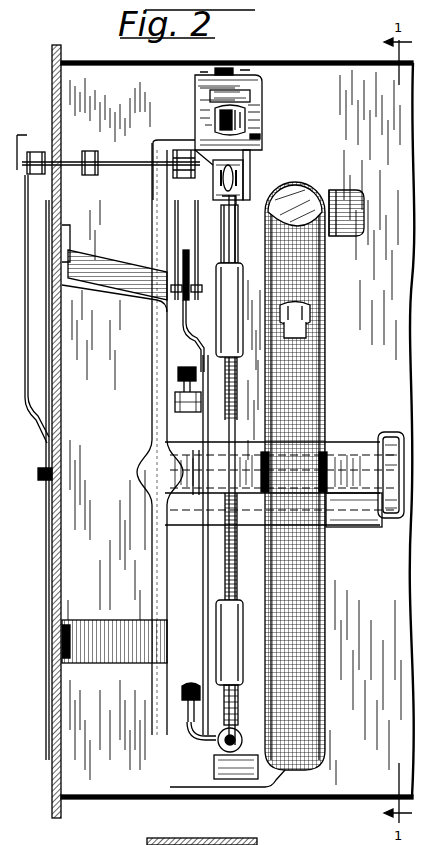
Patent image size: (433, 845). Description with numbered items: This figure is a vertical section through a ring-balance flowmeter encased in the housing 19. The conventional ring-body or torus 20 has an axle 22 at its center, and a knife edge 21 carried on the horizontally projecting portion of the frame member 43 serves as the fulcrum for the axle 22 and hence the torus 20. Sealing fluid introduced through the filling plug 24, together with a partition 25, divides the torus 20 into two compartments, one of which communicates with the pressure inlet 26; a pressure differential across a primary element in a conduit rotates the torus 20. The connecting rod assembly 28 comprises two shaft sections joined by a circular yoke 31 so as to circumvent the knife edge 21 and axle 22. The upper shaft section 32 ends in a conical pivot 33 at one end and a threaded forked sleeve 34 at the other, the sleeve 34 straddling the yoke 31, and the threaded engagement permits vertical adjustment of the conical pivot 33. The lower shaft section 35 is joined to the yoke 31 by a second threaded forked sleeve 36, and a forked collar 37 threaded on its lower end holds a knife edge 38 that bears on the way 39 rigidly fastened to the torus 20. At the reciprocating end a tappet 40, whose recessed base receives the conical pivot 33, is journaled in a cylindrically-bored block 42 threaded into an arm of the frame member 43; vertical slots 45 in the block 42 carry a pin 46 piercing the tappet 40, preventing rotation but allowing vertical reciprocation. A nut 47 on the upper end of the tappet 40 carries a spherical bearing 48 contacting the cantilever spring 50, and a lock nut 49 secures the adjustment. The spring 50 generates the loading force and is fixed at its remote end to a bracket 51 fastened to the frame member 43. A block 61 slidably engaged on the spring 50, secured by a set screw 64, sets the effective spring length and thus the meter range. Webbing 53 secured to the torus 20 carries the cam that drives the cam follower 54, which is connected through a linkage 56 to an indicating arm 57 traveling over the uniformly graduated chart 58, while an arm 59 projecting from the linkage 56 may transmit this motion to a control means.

The housing 19 is at (99, 800).
The ring-body (torus) 20 is at (325, 594).
The knife edge 21 is at (356, 470).
The axle 22 is at (333, 445).
The filling plug 24 is at (306, 320).
The partition 25 is at (300, 186).
The pressure inlet 26 is at (352, 207).
The connecting rod assembly 28 is at (240, 410).
The circular yoke 31 is at (236, 377).
The upper shaft section 32 is at (190, 234).
The conical pivot 33 is at (176, 222).
The threaded forked sleeve 34 is at (242, 284).
The lower shaft section 35 is at (216, 690).
The second threaded forked sleeve 36 is at (216, 612).
The forked collar 37 is at (228, 752).
The knife edge 38 is at (250, 760).
The way 39 is at (205, 765).
The tappet 40 is at (243, 190).
The cylindrically-bored block 42 is at (196, 205).
The frame member 43 is at (153, 373).
The vertical slots 45 is at (236, 176).
The pin 46 is at (240, 182).
The nut 47 is at (246, 126).
The spherical bearing 48 is at (246, 116).
The lock nut 49 is at (262, 131).
The cantilever spring 50 is at (262, 95).
The bracket 51 is at (262, 138).
The webbing 53 is at (176, 398).
The cam follower 54 is at (178, 296).
The linkage 56 is at (73, 168).
The indicating arm 57 is at (31, 402).
The uniformly graduated chart 58 is at (186, 316).
The arm 59 is at (91, 150).
The block 61 is at (198, 113).
The set screw 64 is at (212, 72).